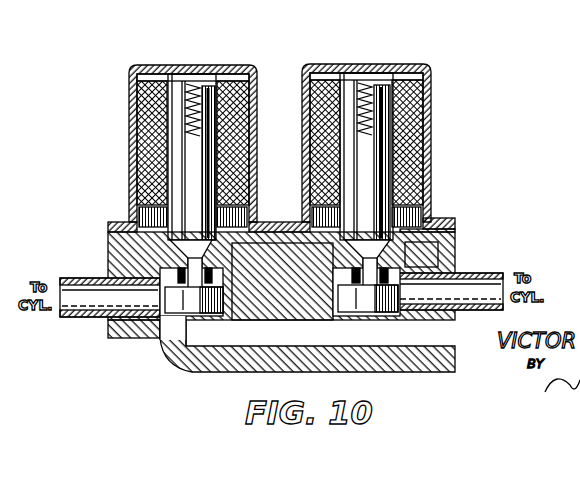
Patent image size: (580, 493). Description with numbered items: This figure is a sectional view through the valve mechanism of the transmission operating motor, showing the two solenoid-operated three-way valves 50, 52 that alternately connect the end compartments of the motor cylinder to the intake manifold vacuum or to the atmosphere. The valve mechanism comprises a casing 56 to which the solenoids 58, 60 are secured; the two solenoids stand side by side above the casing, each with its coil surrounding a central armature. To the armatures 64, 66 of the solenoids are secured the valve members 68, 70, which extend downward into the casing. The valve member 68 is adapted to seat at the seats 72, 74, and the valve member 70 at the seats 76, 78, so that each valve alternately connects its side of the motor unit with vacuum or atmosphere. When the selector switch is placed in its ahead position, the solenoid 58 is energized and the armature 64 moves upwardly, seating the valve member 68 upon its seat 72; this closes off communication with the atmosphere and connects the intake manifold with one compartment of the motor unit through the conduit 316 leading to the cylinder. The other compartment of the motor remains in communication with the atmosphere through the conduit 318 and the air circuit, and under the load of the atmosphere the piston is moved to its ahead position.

The three-way valve 50 is at (148, 65).
The three-way valve 52 is at (338, 64).
The casing 56 is at (442, 257).
The solenoid 58 is at (138, 144).
The solenoid 60 is at (412, 144).
The armature 64 is at (207, 86).
The armature 66 is at (392, 86).
The valve member 68 is at (165, 330).
The valve member 70 is at (400, 316).
The valve seat 72 is at (176, 278).
The valve seat 74 is at (178, 302).
The valve seat 76 is at (438, 220).
The valve seat 78 is at (350, 314).
The conduit 316 is at (90, 303).
The conduit 318 is at (476, 292).